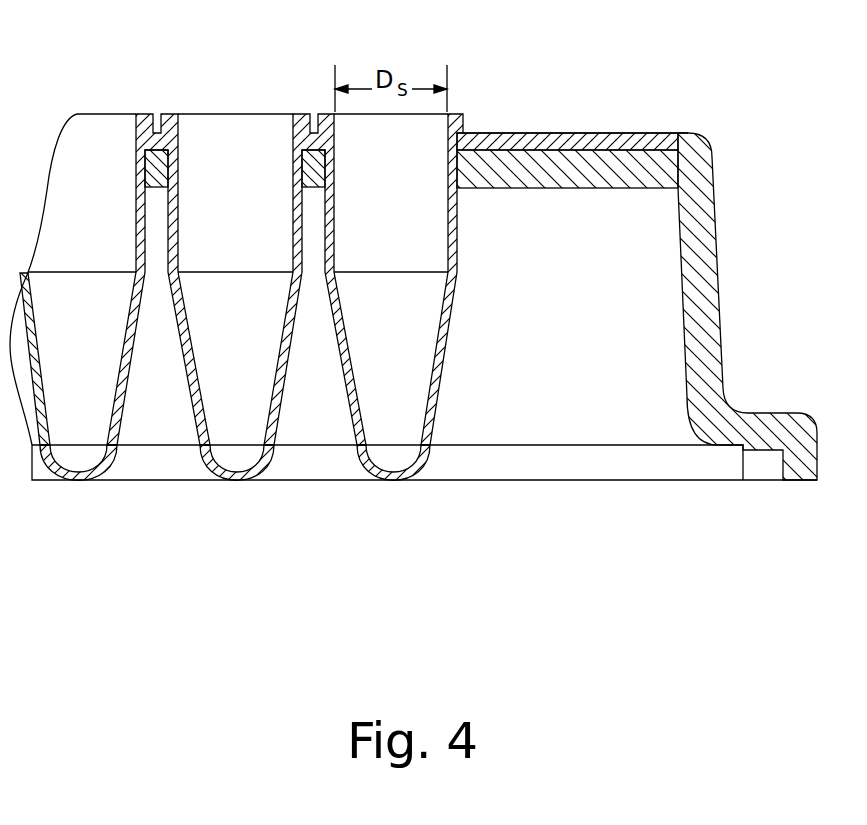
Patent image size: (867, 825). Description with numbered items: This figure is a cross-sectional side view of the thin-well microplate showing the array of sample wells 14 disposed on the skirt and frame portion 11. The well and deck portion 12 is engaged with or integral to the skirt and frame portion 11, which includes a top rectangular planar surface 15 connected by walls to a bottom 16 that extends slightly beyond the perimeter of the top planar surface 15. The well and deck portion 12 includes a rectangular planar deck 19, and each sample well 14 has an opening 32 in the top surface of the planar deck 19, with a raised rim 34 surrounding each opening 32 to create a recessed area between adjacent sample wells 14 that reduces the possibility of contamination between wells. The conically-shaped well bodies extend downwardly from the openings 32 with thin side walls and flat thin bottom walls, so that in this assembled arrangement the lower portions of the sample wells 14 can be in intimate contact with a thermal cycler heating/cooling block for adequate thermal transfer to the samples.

The skirt and frame portion 11 is at (705, 148).
The well and deck portion 12 is at (648, 143).
The sample wells 14 is at (260, 482).
The top rectangular planar surface 15 is at (568, 150).
The bottom 16 is at (770, 472).
The rectangular planar deck 19 is at (570, 133).
The opening 32 is at (222, 114).
The raised rim 34 is at (468, 124).